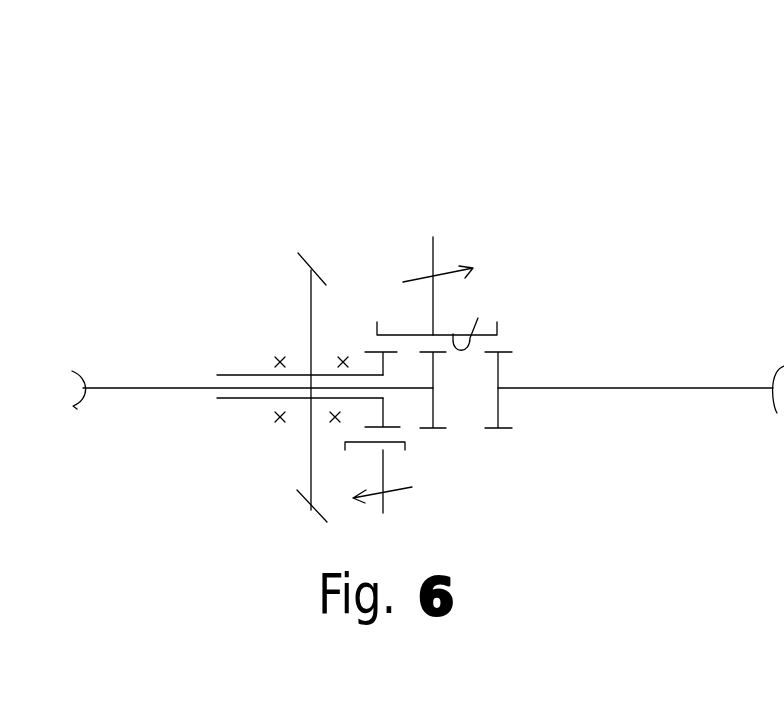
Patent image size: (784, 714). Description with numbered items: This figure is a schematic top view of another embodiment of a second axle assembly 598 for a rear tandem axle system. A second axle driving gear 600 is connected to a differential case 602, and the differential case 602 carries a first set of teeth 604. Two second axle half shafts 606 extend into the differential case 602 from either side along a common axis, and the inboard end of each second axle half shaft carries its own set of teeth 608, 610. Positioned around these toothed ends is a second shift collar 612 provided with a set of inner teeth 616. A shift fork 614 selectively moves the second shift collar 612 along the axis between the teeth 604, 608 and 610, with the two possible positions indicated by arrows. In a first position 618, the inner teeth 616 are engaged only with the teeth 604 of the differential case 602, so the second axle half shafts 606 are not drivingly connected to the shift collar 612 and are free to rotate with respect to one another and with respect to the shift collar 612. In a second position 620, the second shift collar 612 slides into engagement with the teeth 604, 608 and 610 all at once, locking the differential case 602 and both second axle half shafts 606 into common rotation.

The second axle assembly 598 is at (368, 178).
The second axle driving gear 600 is at (311, 294).
The differential case 602 is at (230, 374).
The first set of teeth 604 is at (366, 350).
The second axle half shafts 606 is at (150, 388).
The set of teeth 608 is at (436, 430).
The set of teeth 610 is at (505, 430).
The second shift collar 612 is at (483, 335).
The shift fork 614 is at (433, 248).
The inner teeth 616 is at (478, 318).
The first position 618 is at (382, 511).
The second position 620 is at (512, 223).